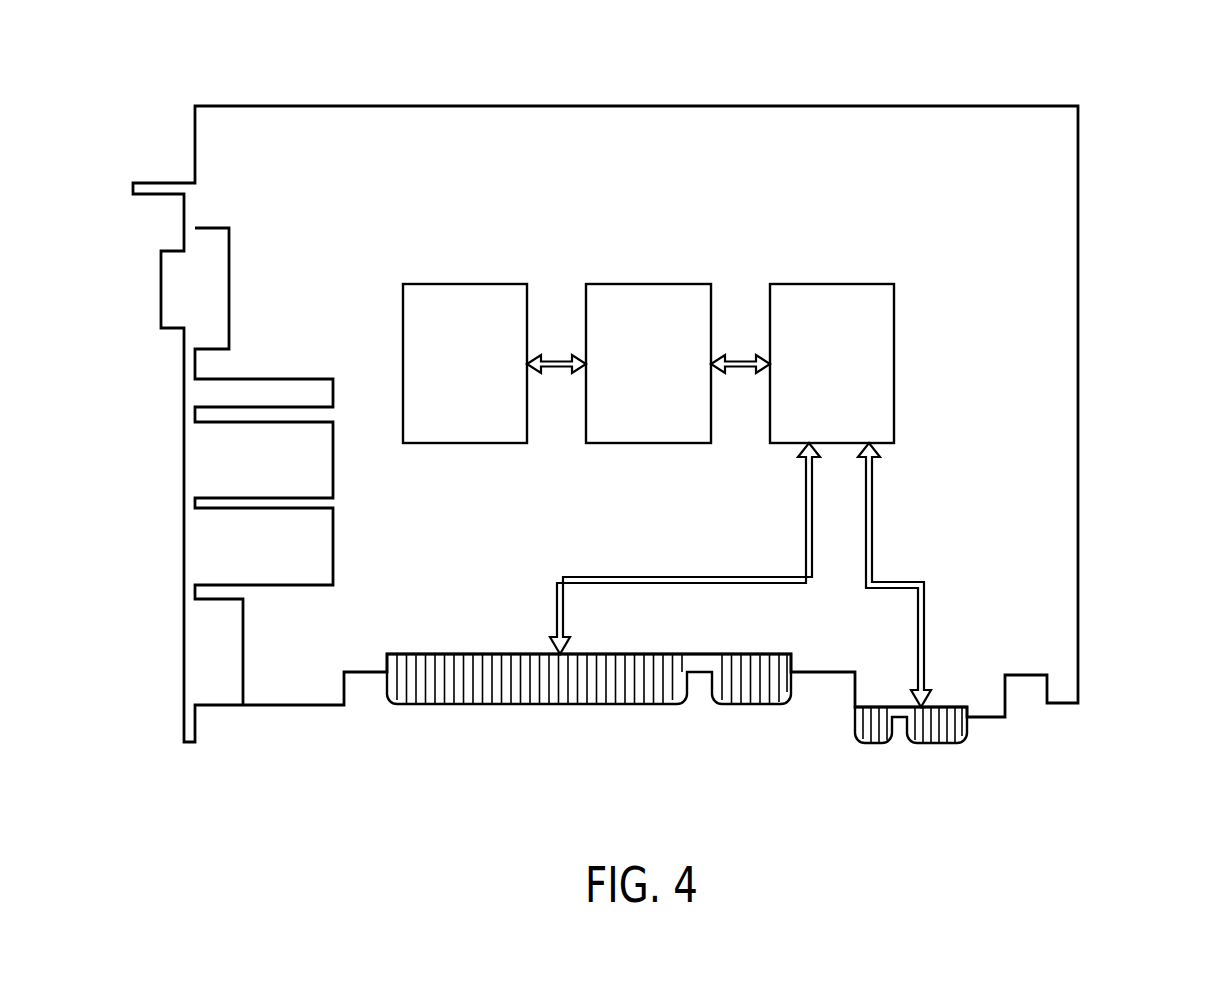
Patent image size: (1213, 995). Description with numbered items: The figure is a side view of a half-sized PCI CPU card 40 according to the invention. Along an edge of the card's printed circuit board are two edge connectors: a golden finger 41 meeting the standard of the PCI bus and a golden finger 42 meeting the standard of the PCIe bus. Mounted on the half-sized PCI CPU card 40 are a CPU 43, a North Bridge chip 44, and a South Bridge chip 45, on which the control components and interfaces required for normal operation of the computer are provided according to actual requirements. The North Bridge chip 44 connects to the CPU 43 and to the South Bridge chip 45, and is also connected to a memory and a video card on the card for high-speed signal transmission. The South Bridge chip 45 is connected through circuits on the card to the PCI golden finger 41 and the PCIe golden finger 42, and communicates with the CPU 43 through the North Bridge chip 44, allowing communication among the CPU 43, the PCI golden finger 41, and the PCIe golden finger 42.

The half-sized PCI CPU card 40 is at (1090, 128).
The golden finger meeting the PCI bus standard 41 is at (383, 720).
The golden finger meeting the PCIe bus standard 42 is at (1017, 753).
The CPU 43 is at (457, 347).
The North Bridge chip 44 is at (641, 345).
The South Bridge chip 45 is at (825, 345).